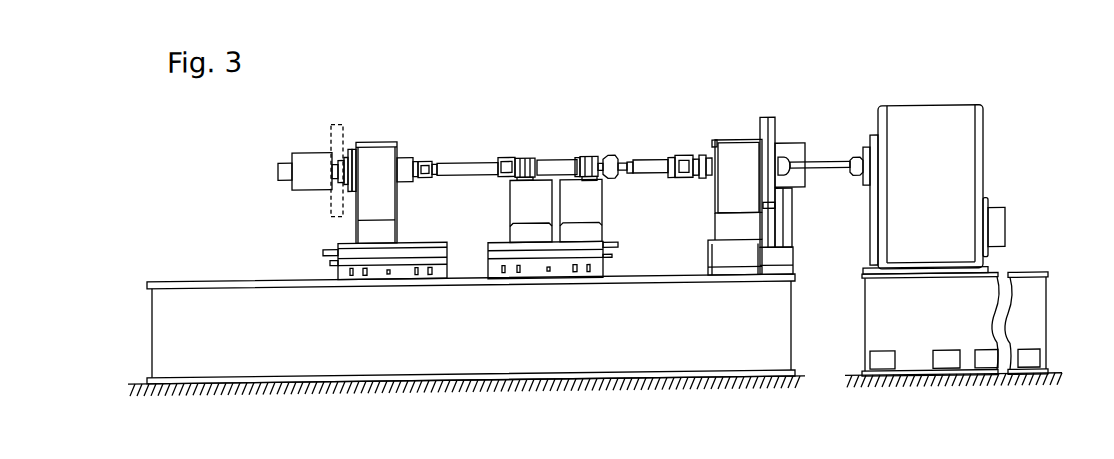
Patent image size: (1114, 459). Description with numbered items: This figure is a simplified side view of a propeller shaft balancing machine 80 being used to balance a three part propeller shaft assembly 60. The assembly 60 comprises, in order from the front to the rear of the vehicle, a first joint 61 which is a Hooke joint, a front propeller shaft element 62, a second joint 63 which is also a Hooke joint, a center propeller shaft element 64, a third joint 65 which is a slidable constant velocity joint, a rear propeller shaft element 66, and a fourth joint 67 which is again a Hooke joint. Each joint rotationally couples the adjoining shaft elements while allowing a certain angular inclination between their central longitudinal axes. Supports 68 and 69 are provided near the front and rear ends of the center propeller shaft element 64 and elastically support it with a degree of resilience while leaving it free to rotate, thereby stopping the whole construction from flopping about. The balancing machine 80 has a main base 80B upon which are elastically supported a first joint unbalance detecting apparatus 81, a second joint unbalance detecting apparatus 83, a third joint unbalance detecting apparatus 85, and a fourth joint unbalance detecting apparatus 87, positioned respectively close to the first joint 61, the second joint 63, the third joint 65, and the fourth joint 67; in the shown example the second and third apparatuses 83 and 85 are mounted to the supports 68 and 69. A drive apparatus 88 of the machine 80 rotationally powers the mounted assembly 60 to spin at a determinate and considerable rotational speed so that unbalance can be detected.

The three part propeller shaft assembly 60 is at (548, 105).
The first joint 61 is at (418, 158).
The front propeller shaft element 62 is at (463, 161).
The second joint 63 is at (502, 157).
The center propeller shaft element 64 is at (557, 161).
The third joint 65 is at (612, 153).
The rear propeller shaft element 66 is at (650, 163).
The fourth joint 67 is at (682, 160).
The support 68 is at (525, 159).
The support 69 is at (585, 158).
The propeller shaft balancing machine 80 is at (660, 123).
The main base 80B is at (227, 277).
The first joint unbalance detecting apparatus 81 is at (372, 155).
The second joint unbalance detecting apparatus 83 is at (517, 202).
The third joint unbalance detecting apparatus 85 is at (595, 203).
The fourth joint unbalance detecting apparatus 87 is at (733, 157).
The drive apparatus 88 is at (920, 125).